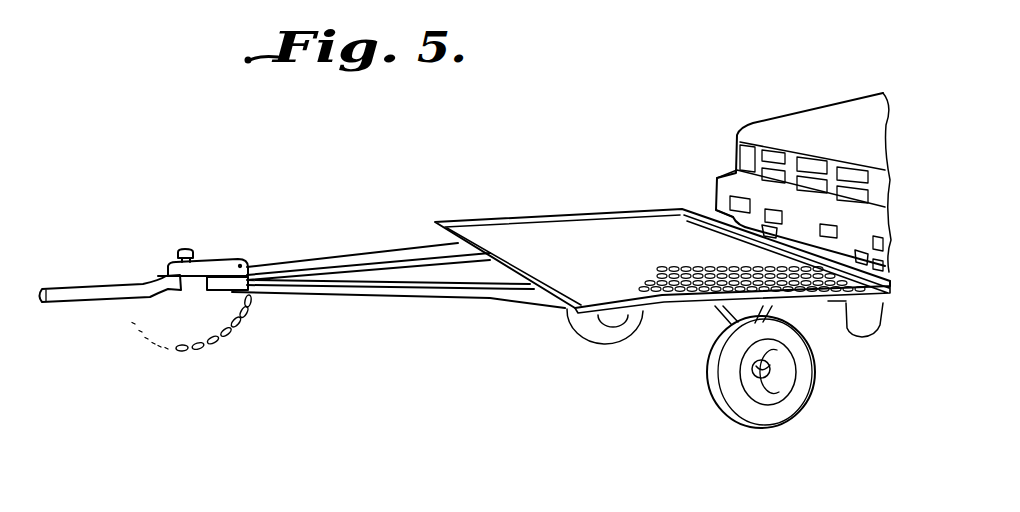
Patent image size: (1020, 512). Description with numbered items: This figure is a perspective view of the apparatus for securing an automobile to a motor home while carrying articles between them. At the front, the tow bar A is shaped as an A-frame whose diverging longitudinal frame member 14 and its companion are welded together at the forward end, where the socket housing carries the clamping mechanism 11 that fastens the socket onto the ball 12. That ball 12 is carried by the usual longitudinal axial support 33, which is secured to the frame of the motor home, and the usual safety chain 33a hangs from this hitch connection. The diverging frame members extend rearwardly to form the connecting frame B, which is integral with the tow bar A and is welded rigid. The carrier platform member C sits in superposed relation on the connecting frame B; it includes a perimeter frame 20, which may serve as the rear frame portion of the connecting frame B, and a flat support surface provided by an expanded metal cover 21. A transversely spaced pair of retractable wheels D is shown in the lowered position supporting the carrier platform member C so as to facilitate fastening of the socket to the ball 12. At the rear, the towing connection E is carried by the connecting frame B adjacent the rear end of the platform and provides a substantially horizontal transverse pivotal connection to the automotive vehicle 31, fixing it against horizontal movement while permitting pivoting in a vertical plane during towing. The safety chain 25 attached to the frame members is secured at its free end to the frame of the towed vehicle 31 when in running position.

The clamping mechanism 11 is at (172, 240).
The ball member 12 is at (163, 278).
The longitudinal frame member 14 is at (333, 258).
The perimeter frame 20 is at (472, 222).
The expanded metal cover 21 is at (523, 237).
The safety chain 25 is at (867, 338).
The automotive vehicle 31 is at (858, 113).
The longitudinal axial support 33 is at (87, 307).
The safety chain 33a is at (203, 351).
The tow bar A is at (398, 236).
The connecting frame B is at (834, 306).
The carrier platform member C is at (662, 227).
The retractable wheels D is at (733, 426).
The towing connection E is at (860, 252).